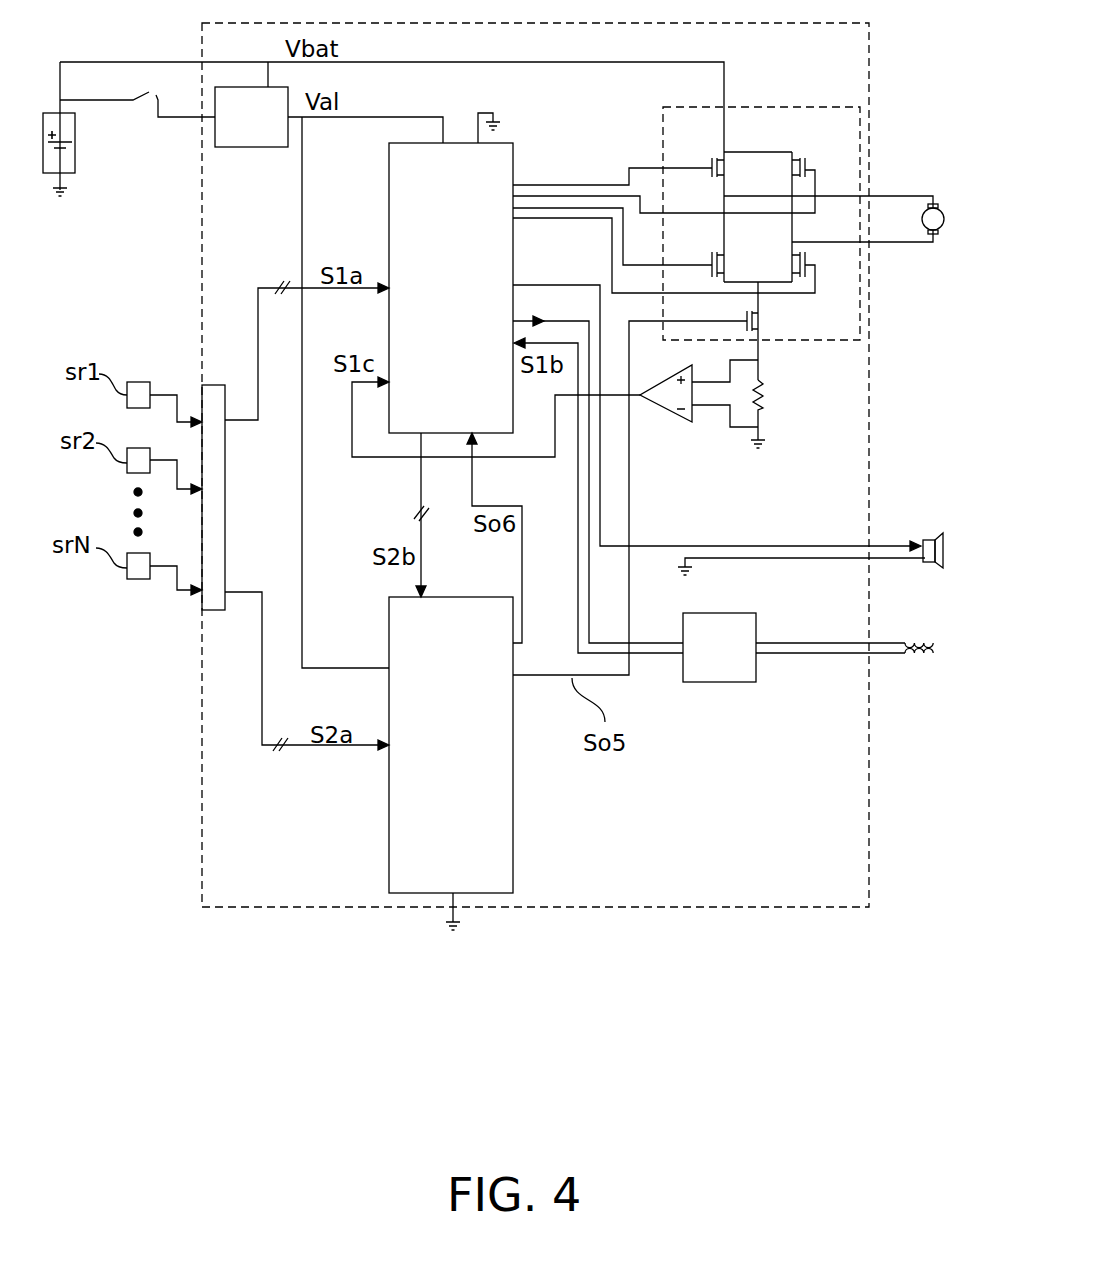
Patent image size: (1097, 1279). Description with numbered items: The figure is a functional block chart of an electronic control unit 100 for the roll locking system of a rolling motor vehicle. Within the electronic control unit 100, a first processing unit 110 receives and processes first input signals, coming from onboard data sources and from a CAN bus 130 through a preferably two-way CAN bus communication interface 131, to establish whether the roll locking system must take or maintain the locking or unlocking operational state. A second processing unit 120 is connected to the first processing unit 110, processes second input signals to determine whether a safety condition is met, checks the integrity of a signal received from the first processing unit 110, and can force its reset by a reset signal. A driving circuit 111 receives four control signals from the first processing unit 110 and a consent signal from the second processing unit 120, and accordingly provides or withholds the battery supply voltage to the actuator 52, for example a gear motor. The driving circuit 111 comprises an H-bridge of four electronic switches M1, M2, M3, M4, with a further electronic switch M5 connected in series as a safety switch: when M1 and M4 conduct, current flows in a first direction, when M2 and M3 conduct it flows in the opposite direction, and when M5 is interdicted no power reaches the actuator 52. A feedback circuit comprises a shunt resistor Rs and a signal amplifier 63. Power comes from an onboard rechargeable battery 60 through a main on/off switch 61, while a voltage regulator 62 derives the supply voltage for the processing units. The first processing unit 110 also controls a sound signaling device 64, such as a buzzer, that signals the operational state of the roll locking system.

The electronic control unit 100 is at (735, 907).
The first processing unit 110 is at (451, 273).
The driving circuit 111 is at (761, 212).
The second processing unit 120 is at (451, 763).
The CAN bus 130 is at (910, 634).
The CAN bus communication interface 131 is at (719, 647).
The actuator 52 is at (928, 180).
The onboard rechargeable battery 60 is at (75, 143).
The main on/off switch 61 is at (144, 82).
The voltage regulator 62 is at (251, 117).
The signal amplifier 63 is at (668, 389).
The sound signaling device 64 is at (940, 536).
The electronic switch M1 is at (703, 153).
The electronic switch M2 is at (811, 153).
The electronic switch M3 is at (701, 257).
The electronic switch M4 is at (822, 261).
The electronic switch M5 is at (773, 331).
The shunt resistor Rs is at (745, 404).